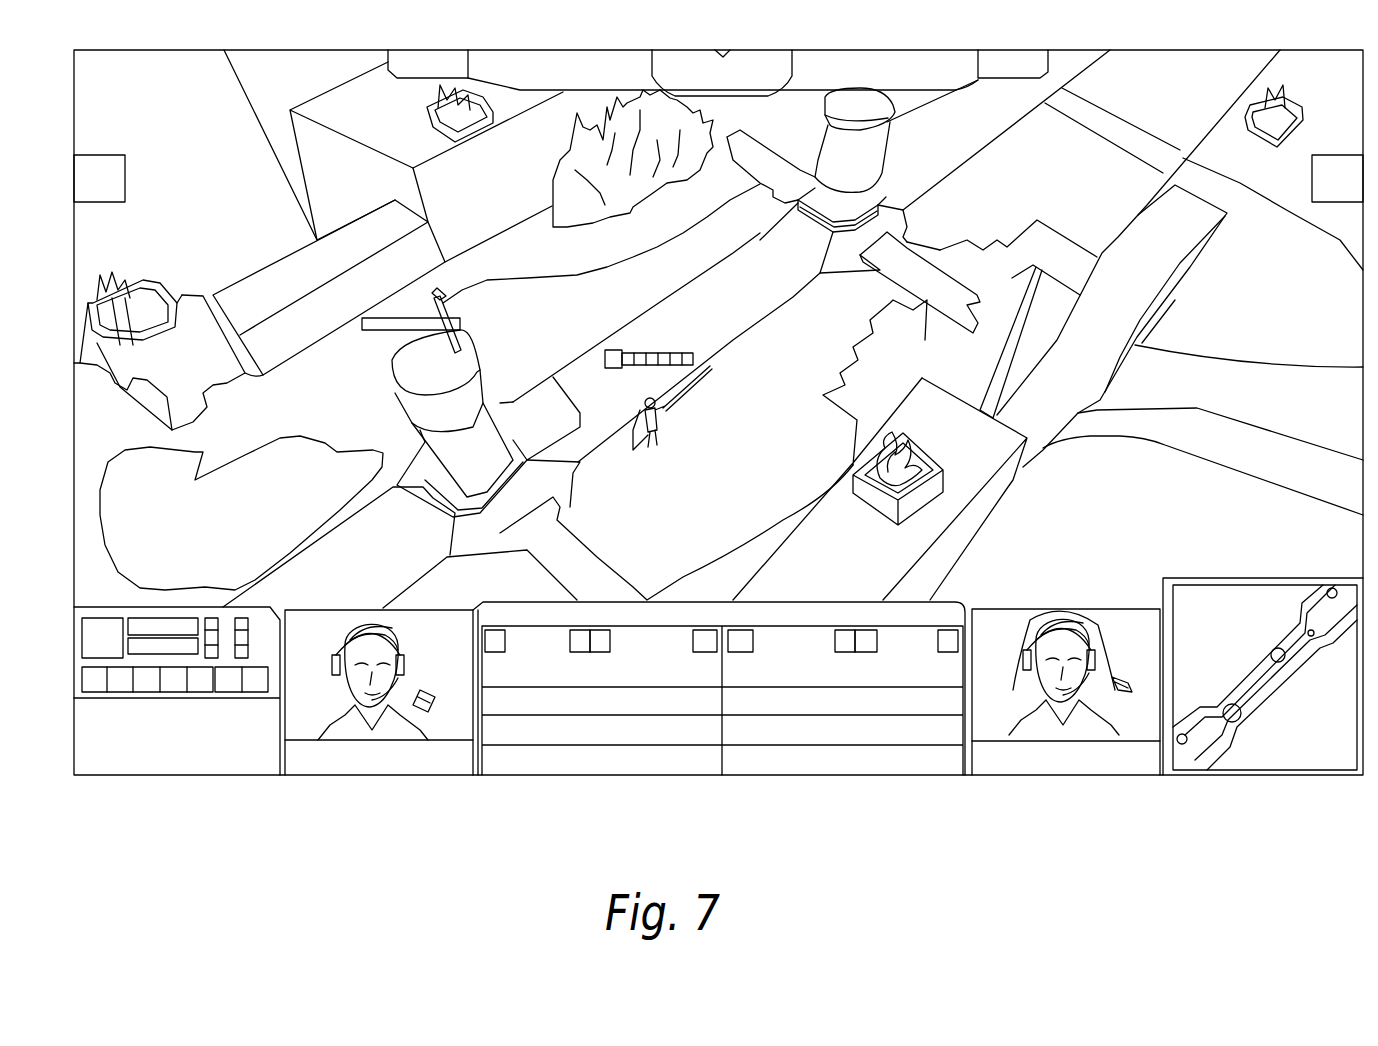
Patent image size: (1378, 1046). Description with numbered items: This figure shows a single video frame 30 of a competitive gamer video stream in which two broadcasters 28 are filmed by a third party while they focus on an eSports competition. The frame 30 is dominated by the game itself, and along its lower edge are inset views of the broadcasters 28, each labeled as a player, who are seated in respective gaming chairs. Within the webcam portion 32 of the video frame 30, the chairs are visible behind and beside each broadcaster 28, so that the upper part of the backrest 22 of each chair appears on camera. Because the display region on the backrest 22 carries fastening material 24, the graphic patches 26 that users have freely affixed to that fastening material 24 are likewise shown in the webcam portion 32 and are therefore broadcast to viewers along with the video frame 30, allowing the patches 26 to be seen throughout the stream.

The backrest 22 is at (332, 676).
The fastening material 24 is at (430, 733).
The graphic patches 26 is at (433, 707).
The broadcasters 28 is at (343, 723).
The video frame 30 is at (555, 373).
The webcam portion 32 is at (480, 687).